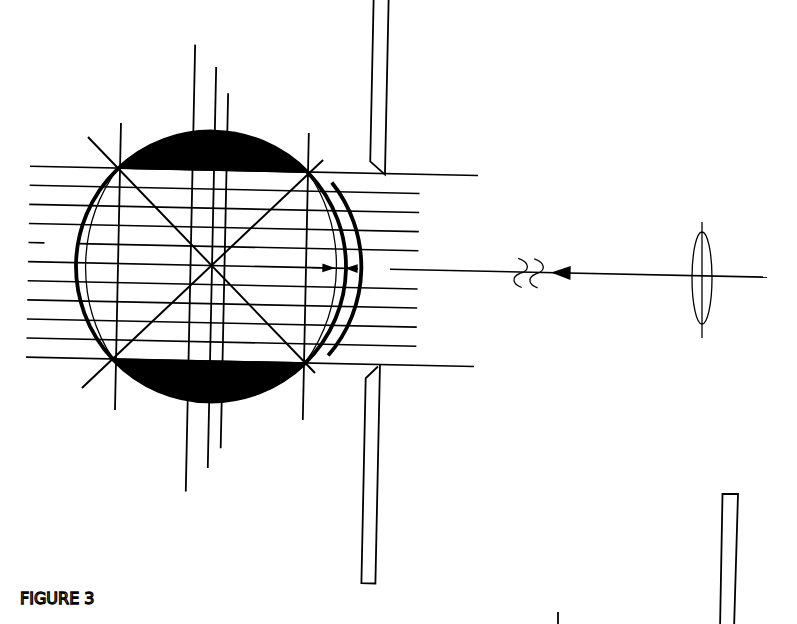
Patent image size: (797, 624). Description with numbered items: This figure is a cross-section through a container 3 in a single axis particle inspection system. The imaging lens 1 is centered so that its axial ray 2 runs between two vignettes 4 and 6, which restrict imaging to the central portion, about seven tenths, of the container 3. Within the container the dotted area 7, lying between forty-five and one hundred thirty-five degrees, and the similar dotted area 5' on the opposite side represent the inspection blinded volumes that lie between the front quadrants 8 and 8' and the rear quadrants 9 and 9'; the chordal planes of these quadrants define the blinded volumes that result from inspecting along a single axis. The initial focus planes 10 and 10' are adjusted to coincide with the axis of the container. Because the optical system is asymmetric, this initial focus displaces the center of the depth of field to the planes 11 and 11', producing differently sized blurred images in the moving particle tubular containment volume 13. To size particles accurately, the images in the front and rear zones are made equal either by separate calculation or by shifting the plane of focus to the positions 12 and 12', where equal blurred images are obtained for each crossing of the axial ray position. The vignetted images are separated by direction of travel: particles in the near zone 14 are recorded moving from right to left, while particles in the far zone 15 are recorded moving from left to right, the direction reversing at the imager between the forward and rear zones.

The imaging lens 1 is at (695, 229).
The axial ray 2 is at (723, 273).
The container 3 is at (262, 134).
The vignette 4 is at (389, 460).
The dotted area 5' is at (208, 369).
The vignette 6 is at (398, 105).
The dotted area 7 is at (174, 179).
The front quadrant 8 is at (324, 190).
The front quadrant 8' is at (314, 343).
The rear quadrant 9 is at (134, 182).
The rear quadrant 9' is at (121, 339).
The initial focus plane 10 is at (239, 150).
The initial focus plane 10' is at (244, 368).
The displaced depth-of-field center plane 11 is at (210, 137).
The displaced depth-of-field center plane 11' is at (221, 379).
The shifted plane of focus position 12 is at (256, 166).
The shifted plane of focus position 12' is at (243, 357).
The moving particle tubular containment volume 13 is at (343, 268).
The near zone 14 is at (334, 293).
The far zone 15 is at (86, 240).